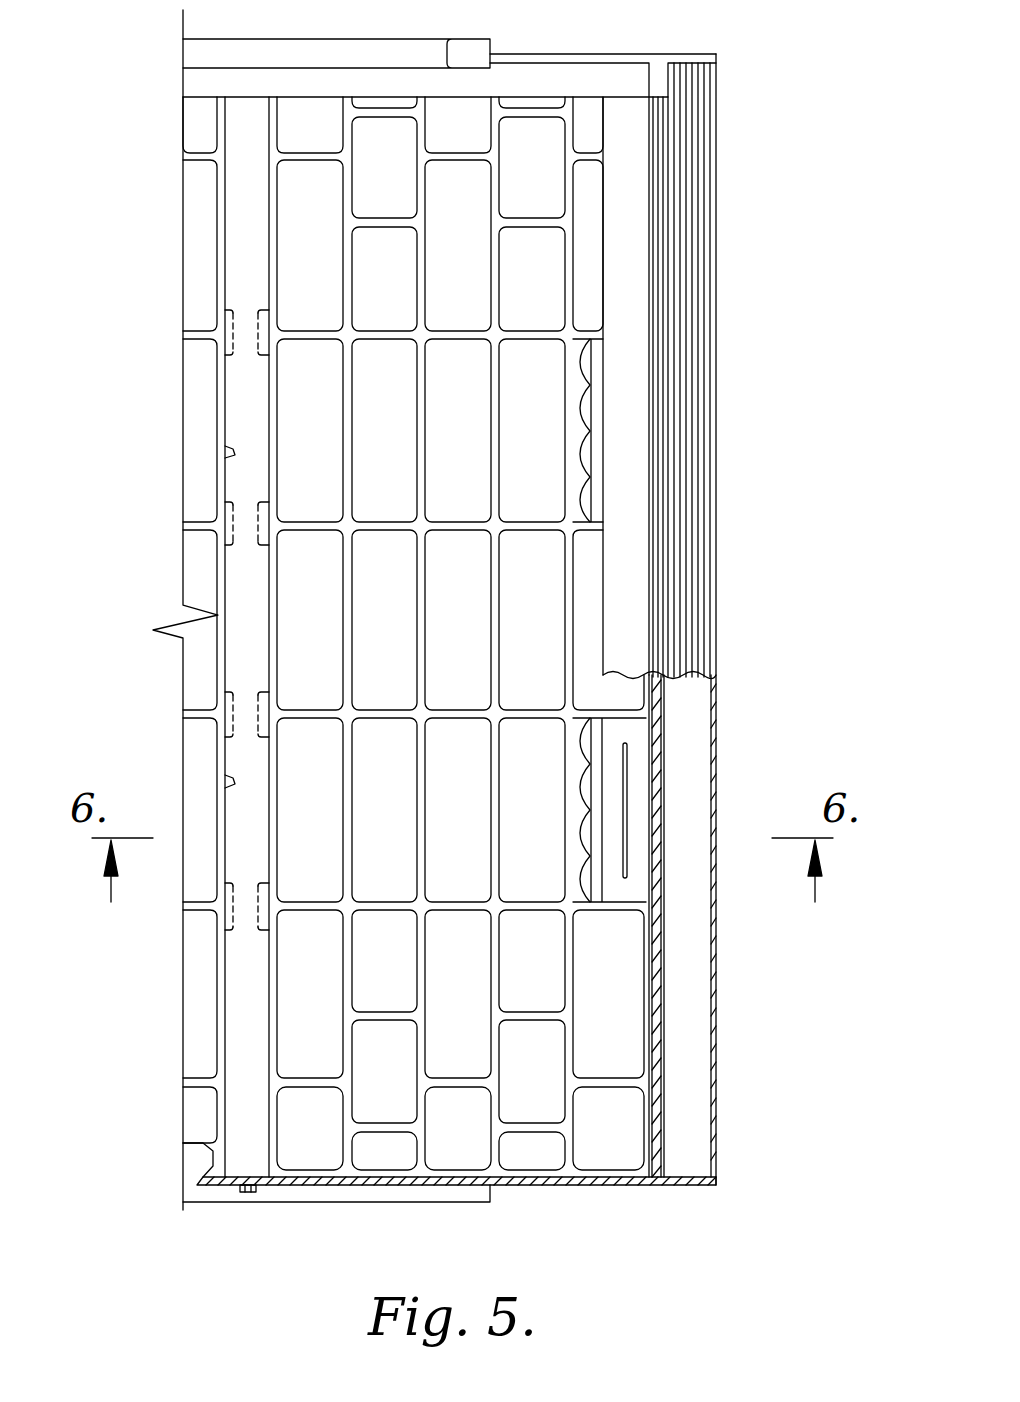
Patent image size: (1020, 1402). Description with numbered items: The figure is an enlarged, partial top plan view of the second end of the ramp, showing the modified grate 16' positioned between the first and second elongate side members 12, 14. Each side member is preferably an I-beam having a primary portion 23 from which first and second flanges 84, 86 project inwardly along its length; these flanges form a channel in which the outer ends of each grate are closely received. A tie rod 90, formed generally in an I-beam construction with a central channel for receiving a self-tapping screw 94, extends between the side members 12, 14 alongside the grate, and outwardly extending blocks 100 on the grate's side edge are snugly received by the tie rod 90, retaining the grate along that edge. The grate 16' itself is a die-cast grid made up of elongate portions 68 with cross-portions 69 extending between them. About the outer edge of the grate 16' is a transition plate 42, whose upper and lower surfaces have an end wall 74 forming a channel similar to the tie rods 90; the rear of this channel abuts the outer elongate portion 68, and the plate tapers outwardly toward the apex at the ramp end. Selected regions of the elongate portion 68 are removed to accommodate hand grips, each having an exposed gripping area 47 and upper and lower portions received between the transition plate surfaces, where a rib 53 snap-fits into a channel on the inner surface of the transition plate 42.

The first elongate side member 12 is at (287, 29).
The first flange 84 is at (528, 76).
The transition plate 42 is at (706, 430).
The gripping area 47 is at (580, 398).
The cross-portion 69 is at (385, 520).
The elongate portion 68 is at (490, 830).
The outwardly extending blocks 100 is at (258, 538).
The tie rod 90 is at (248, 593).
The rib 53 is at (628, 780).
The end wall 74 is at (657, 1013).
The grate 16' is at (680, 926).
The self-tapping screw 94 is at (247, 1192).
The second elongate side member 14 is at (340, 1180).
The second flange 86 is at (463, 1155).
The primary portion 23 is at (520, 1178).